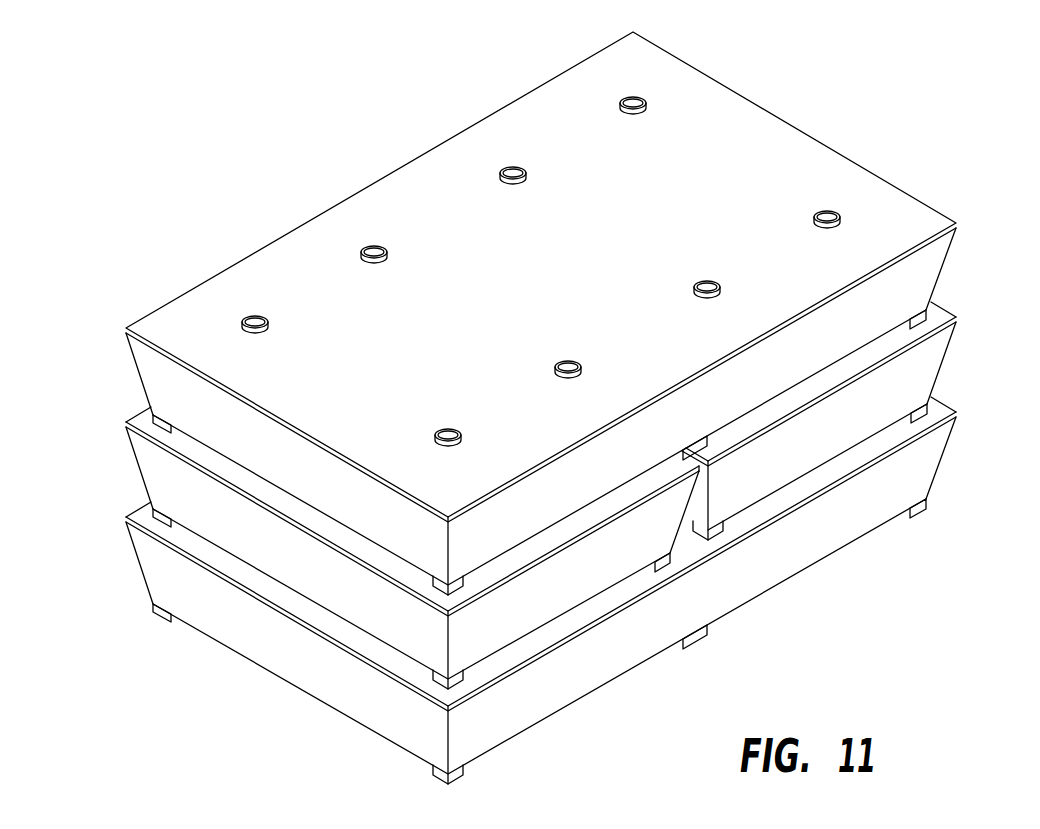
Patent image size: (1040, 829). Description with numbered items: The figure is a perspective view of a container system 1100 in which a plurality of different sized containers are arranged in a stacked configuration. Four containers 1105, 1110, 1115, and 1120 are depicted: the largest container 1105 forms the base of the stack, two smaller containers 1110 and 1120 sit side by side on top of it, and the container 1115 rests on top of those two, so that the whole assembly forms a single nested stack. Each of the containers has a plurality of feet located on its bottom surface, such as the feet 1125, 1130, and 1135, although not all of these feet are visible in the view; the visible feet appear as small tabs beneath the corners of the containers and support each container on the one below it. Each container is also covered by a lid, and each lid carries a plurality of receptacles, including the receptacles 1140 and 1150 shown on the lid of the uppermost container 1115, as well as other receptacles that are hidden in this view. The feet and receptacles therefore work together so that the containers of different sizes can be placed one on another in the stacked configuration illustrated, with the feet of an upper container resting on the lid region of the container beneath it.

The stacked tray assembly 1100 is at (108, 250).
The container 1105 is at (531, 588).
The container 1110 is at (140, 470).
The container 1115 is at (531, 313).
The container 1120 is at (942, 363).
The foot 1125 is at (162, 620).
The foot 1130 is at (945, 410).
The foot 1135 is at (930, 308).
The receptacle 1140 is at (265, 317).
The receptacle 1150 is at (713, 280).